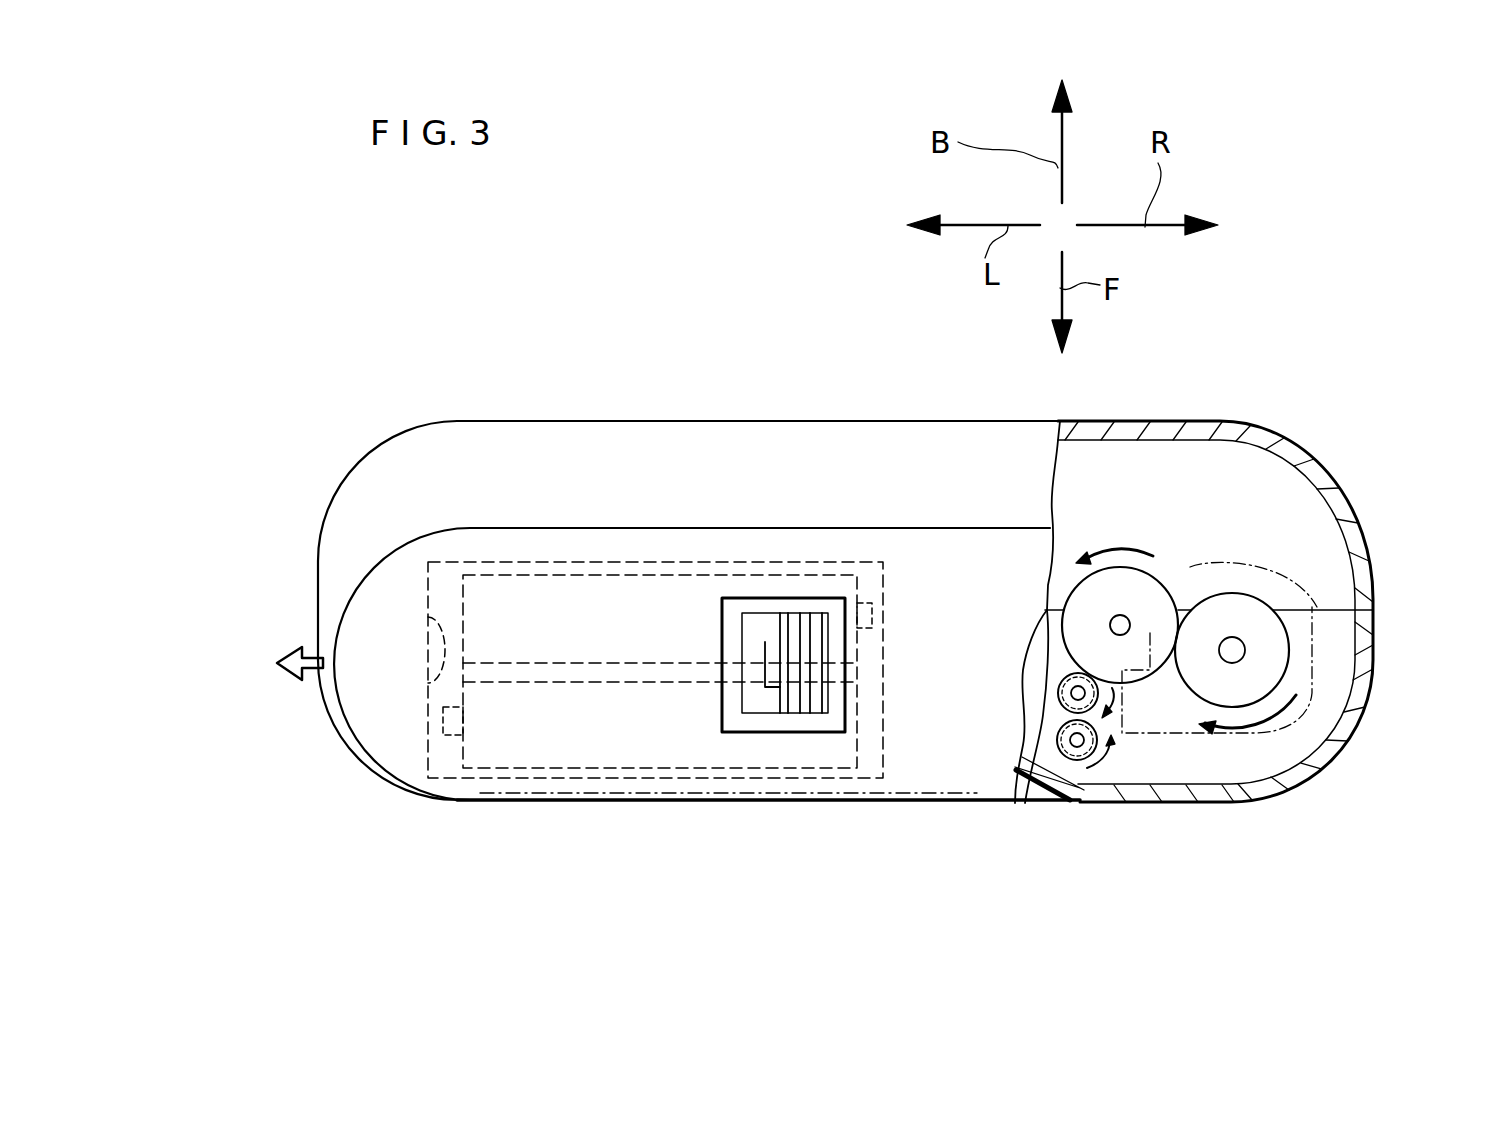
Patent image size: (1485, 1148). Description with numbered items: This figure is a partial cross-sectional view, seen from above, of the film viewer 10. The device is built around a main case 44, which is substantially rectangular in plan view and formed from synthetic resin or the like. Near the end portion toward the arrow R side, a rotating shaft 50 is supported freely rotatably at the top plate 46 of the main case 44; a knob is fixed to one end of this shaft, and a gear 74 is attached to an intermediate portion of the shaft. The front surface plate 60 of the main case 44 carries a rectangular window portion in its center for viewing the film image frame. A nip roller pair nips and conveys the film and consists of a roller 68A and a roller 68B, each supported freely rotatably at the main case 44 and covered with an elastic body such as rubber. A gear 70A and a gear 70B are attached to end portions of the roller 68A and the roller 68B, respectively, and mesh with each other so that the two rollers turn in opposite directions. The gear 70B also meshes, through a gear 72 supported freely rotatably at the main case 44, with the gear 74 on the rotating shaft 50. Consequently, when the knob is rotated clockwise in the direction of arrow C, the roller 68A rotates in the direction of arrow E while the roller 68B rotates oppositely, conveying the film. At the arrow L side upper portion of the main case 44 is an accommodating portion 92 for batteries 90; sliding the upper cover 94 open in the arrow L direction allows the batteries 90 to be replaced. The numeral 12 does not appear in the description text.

The film viewer 10 is at (1343, 392).
The ink ribbon path 12 is at (1313, 686).
The main case 44 is at (1243, 422).
The top plate 46 is at (892, 443).
The rotating shaft 50 is at (1373, 600).
The front surface plate 60 is at (634, 803).
The roller 68A is at (1097, 758).
The roller 68B is at (1062, 672).
The gear 70A is at (1078, 795).
The gear 70B is at (1058, 708).
The gear 72 is at (1151, 635).
The gear 74 is at (1236, 640).
The batteries 90 is at (477, 763).
The accommodating portion 92 is at (427, 700).
The upper cover 94 is at (355, 592).
The arrow C is at (1287, 697).
The arrow E is at (1112, 752).